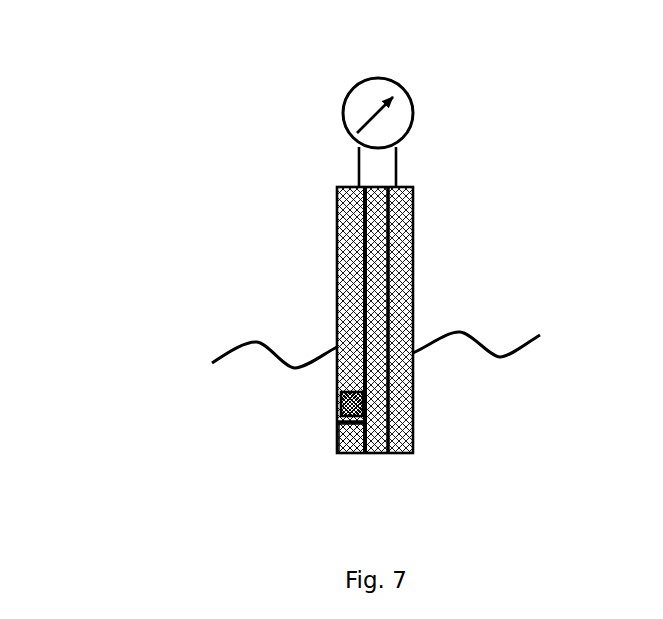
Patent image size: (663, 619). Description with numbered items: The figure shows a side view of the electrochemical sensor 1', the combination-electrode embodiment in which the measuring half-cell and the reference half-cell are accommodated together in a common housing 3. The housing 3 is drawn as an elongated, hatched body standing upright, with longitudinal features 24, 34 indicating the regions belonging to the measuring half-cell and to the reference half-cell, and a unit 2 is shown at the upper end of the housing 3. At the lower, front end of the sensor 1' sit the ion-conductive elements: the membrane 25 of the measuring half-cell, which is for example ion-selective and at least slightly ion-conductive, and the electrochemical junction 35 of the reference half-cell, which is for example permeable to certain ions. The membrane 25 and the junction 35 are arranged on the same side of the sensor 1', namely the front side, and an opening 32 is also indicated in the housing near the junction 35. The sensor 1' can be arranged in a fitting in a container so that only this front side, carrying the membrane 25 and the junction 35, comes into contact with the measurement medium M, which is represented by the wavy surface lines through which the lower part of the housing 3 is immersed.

The electrochemical sensor 1' is at (299, 269).
The measuring unit / gauge 2 is at (329, 92).
The common housing 3 is at (395, 465).
The jacket / housing 24 is at (358, 292).
The jacket / housing 34 is at (375, 320).
The membrane 25 is at (329, 442).
The opening 32 is at (329, 413).
The electrochemical junction 35 is at (329, 397).
The measurement medium M is at (526, 396).